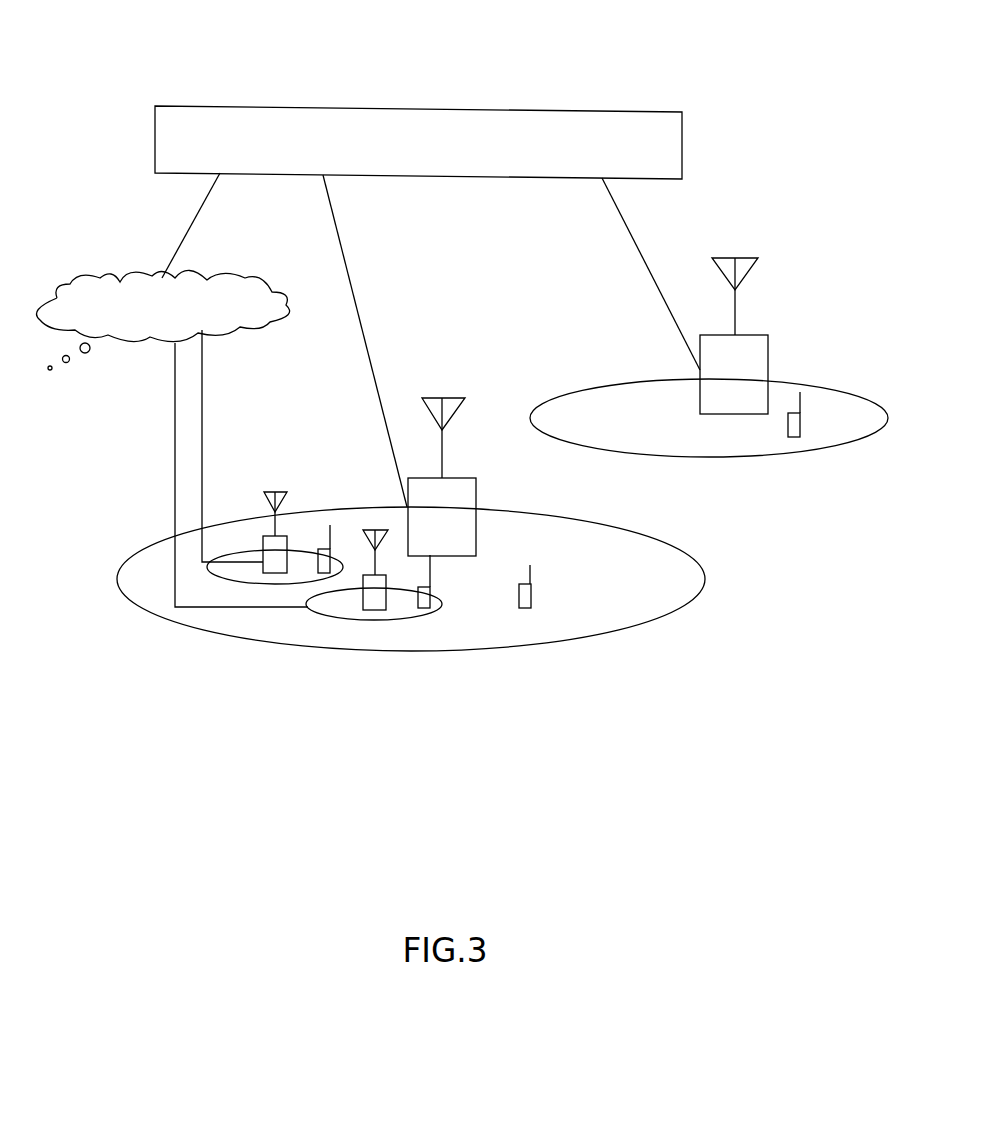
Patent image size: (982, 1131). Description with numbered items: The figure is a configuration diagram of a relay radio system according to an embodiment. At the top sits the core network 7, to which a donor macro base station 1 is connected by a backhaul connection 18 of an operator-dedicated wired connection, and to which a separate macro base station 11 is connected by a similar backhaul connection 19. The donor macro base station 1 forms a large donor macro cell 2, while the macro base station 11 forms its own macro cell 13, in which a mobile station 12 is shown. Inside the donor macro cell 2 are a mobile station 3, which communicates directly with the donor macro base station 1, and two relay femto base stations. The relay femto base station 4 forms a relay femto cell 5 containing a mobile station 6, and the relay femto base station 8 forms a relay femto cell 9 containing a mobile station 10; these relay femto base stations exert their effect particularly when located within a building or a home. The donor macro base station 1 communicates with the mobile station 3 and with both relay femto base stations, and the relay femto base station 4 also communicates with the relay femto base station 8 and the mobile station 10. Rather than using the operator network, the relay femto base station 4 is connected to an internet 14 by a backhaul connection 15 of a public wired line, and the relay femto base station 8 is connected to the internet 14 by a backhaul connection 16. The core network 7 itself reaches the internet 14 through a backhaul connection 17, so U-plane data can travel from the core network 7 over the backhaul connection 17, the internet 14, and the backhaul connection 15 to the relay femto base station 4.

The donor macro base station 1 is at (453, 390).
The donor macro cell 2 is at (553, 645).
The mobile station 3 is at (530, 565).
The relay femto base station 4 is at (275, 485).
The relay femto cell 5 is at (297, 582).
The mobile station 6 is at (330, 525).
The core network 7 is at (417, 105).
The relay femto base station 8 is at (373, 612).
The relay femto cell 9 is at (397, 620).
The mobile station 10 is at (430, 620).
The macro base station 11 is at (745, 247).
The mobile station 12 is at (800, 392).
The macro cell 13 is at (812, 455).
The internet 14 is at (62, 287).
The backhaul connection 15 is at (200, 430).
The backhaul connection 16 is at (175, 462).
The backhaul connection 17 is at (200, 218).
The backhaul connection 18 is at (340, 220).
The backhaul connection 19 is at (635, 256).